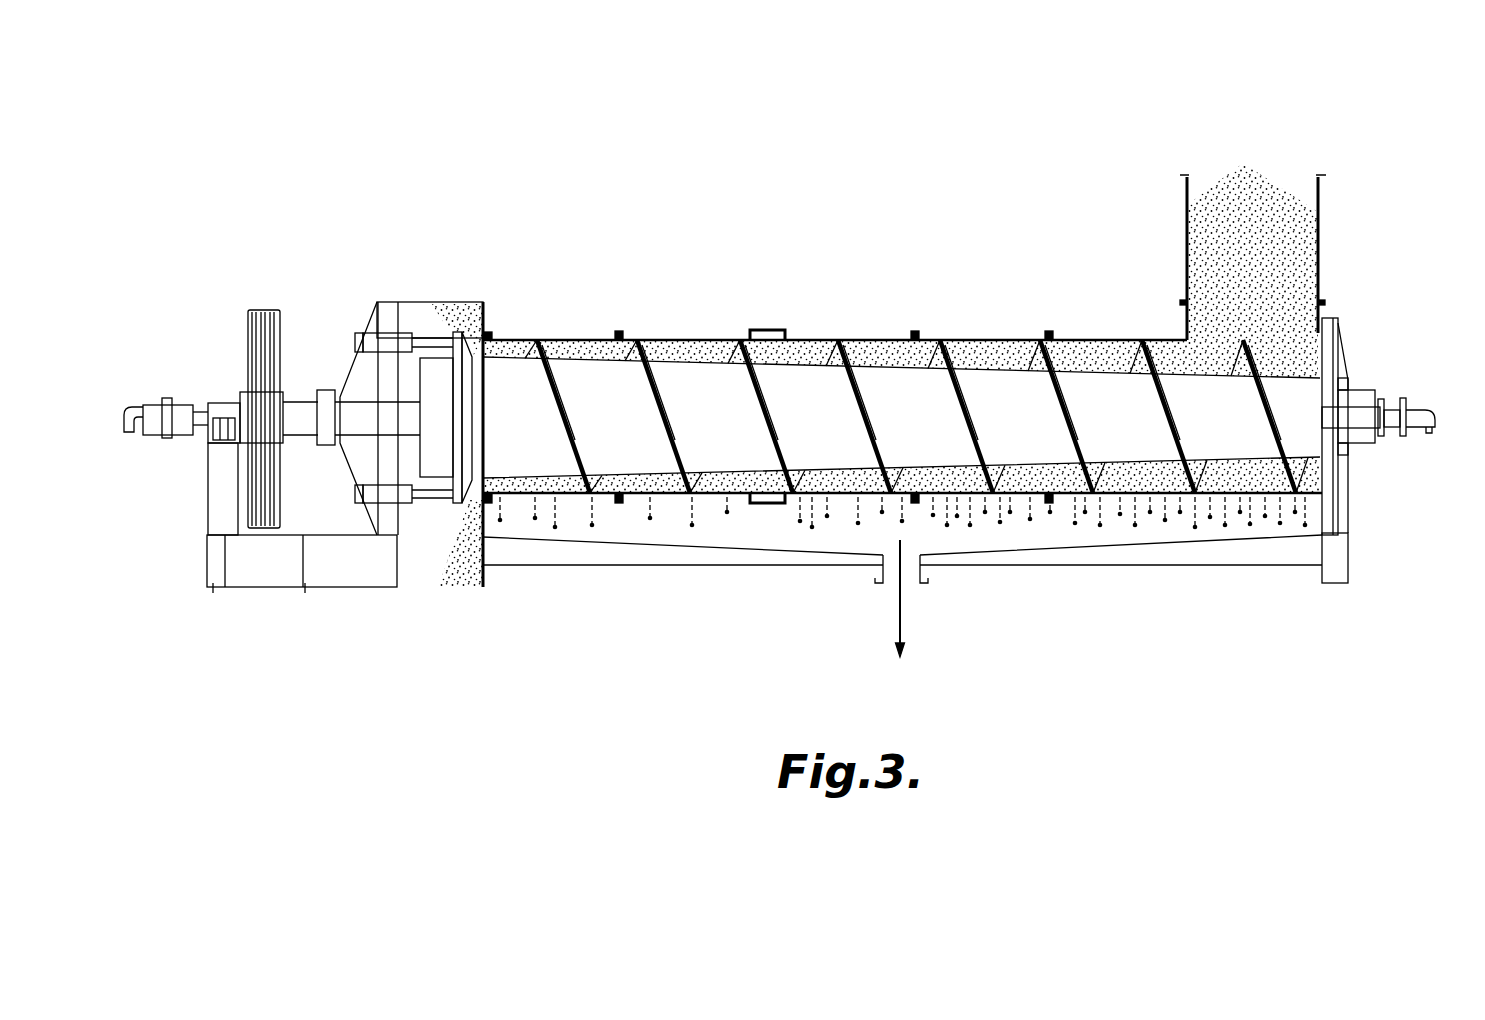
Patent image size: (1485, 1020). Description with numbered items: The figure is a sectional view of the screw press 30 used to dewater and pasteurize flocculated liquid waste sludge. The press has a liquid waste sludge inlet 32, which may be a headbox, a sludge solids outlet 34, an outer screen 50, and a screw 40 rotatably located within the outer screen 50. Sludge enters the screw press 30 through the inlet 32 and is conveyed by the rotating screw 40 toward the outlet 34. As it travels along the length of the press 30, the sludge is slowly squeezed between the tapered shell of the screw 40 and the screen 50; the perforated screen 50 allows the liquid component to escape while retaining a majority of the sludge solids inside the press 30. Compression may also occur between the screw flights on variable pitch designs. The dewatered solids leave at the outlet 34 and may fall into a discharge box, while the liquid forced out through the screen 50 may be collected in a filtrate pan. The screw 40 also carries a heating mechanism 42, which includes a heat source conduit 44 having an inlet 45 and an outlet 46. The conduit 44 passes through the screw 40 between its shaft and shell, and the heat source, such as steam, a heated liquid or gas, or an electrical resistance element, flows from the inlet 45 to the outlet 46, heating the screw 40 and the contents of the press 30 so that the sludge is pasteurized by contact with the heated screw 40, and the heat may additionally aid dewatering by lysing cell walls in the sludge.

The screw press 30 is at (650, 692).
The liquid waste sludge inlet 32 is at (1243, 157).
The sludge solids outlet 34 is at (452, 590).
The screw 40 is at (677, 387).
The heating mechanism 42 is at (1440, 393).
The heat source conduit 44 is at (1350, 405).
The inlet 45 is at (1430, 442).
The outlet 46 is at (135, 433).
The outer screen 50 is at (990, 340).